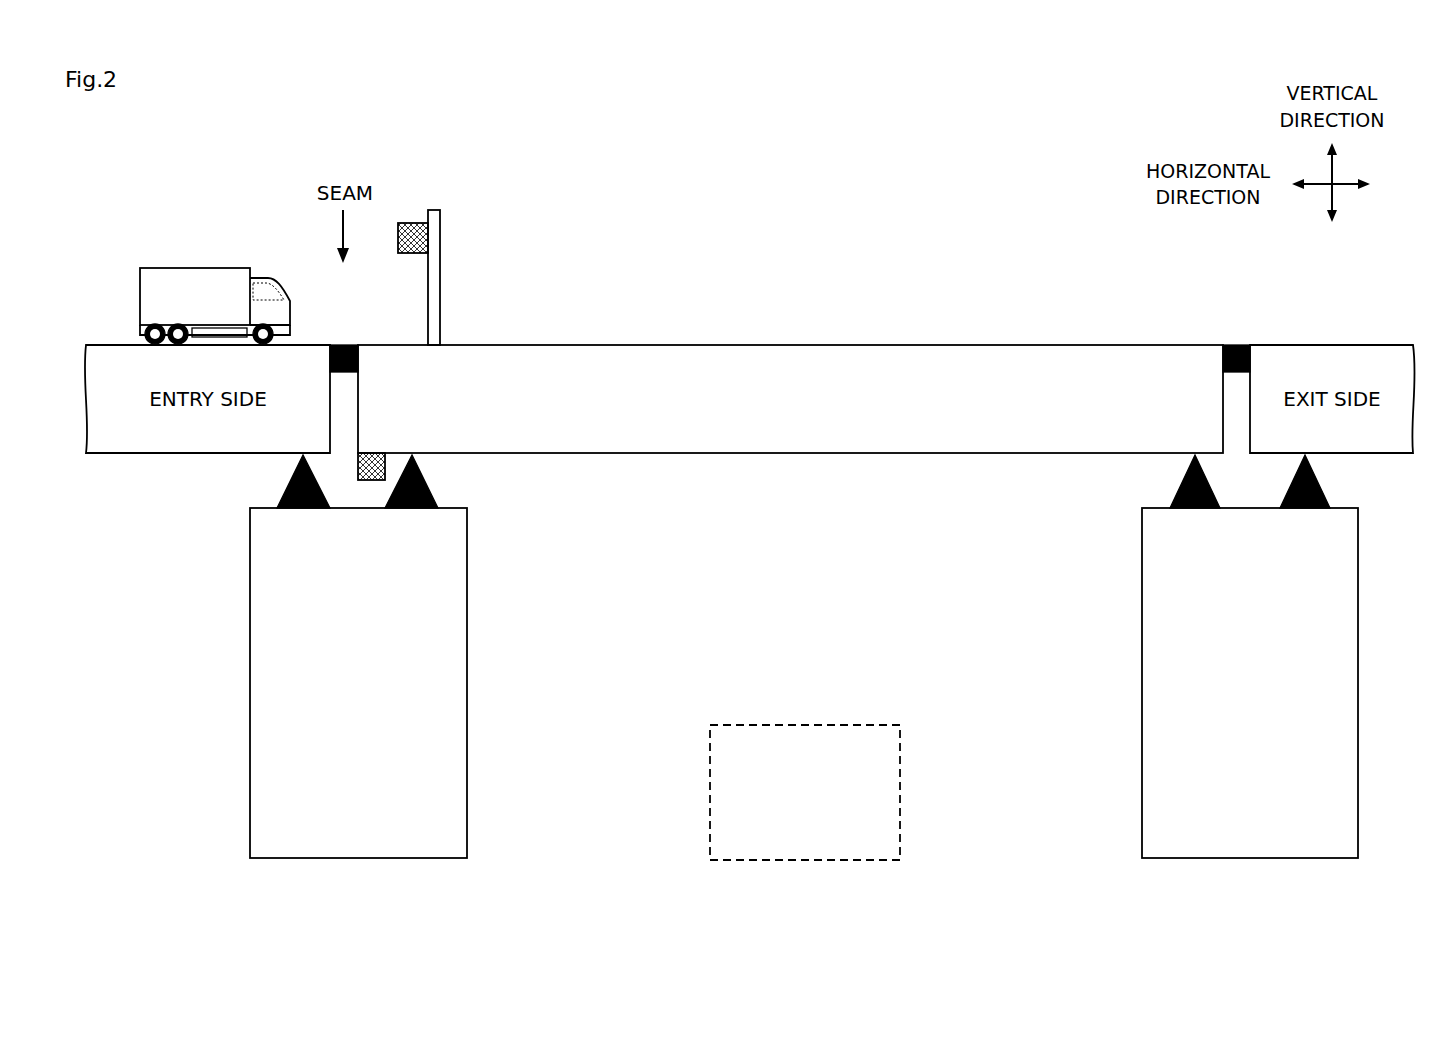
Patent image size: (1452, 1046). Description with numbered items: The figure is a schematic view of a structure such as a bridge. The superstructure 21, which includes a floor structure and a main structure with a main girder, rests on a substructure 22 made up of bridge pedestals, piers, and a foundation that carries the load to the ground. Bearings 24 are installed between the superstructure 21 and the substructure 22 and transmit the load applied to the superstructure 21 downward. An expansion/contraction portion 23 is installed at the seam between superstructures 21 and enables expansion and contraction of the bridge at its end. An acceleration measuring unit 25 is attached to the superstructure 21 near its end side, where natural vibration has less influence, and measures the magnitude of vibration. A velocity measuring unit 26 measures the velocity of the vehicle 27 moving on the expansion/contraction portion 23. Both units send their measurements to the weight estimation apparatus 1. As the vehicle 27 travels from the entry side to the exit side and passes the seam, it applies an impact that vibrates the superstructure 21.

The weight estimation apparatus 1 is at (806, 724).
The superstructure 21 is at (790, 345).
The substructure 22 is at (250, 668).
The expansion/contraction portion 23 is at (347, 345).
The bearing 24 is at (277, 478).
The acceleration measuring unit 25 is at (393, 462).
The velocity measuring unit 26 is at (414, 223).
The vehicle 27 is at (198, 268).